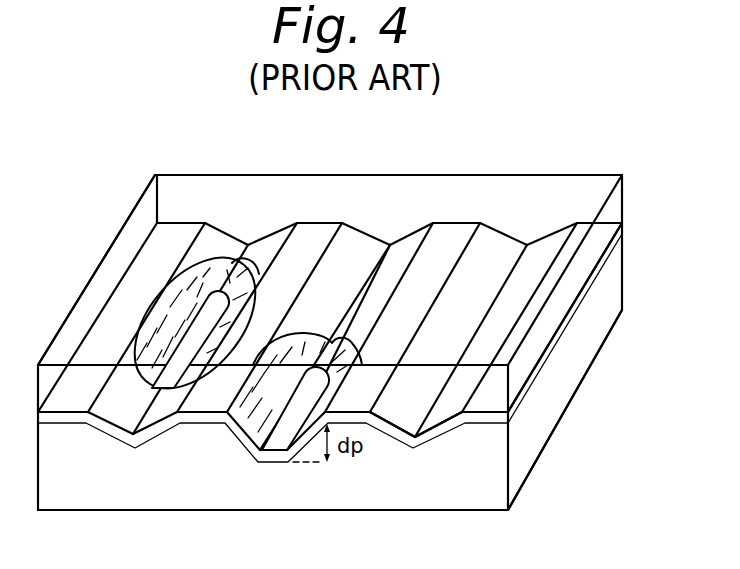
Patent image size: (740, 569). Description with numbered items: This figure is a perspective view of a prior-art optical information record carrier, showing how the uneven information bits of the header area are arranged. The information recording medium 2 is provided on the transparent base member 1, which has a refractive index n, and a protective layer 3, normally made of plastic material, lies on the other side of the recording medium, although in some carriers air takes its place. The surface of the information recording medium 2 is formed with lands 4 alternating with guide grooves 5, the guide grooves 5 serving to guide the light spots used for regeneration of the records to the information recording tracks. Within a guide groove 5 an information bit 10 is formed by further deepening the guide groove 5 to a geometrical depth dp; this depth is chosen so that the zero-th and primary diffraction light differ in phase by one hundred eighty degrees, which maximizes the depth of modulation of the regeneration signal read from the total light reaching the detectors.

The transparent base member 1 is at (507, 190).
The information recording medium 2 is at (522, 395).
The protective layer 3 is at (578, 365).
The land 4 is at (202, 423).
The guide groove 5 is at (413, 448).
The information bit 10 is at (213, 310).